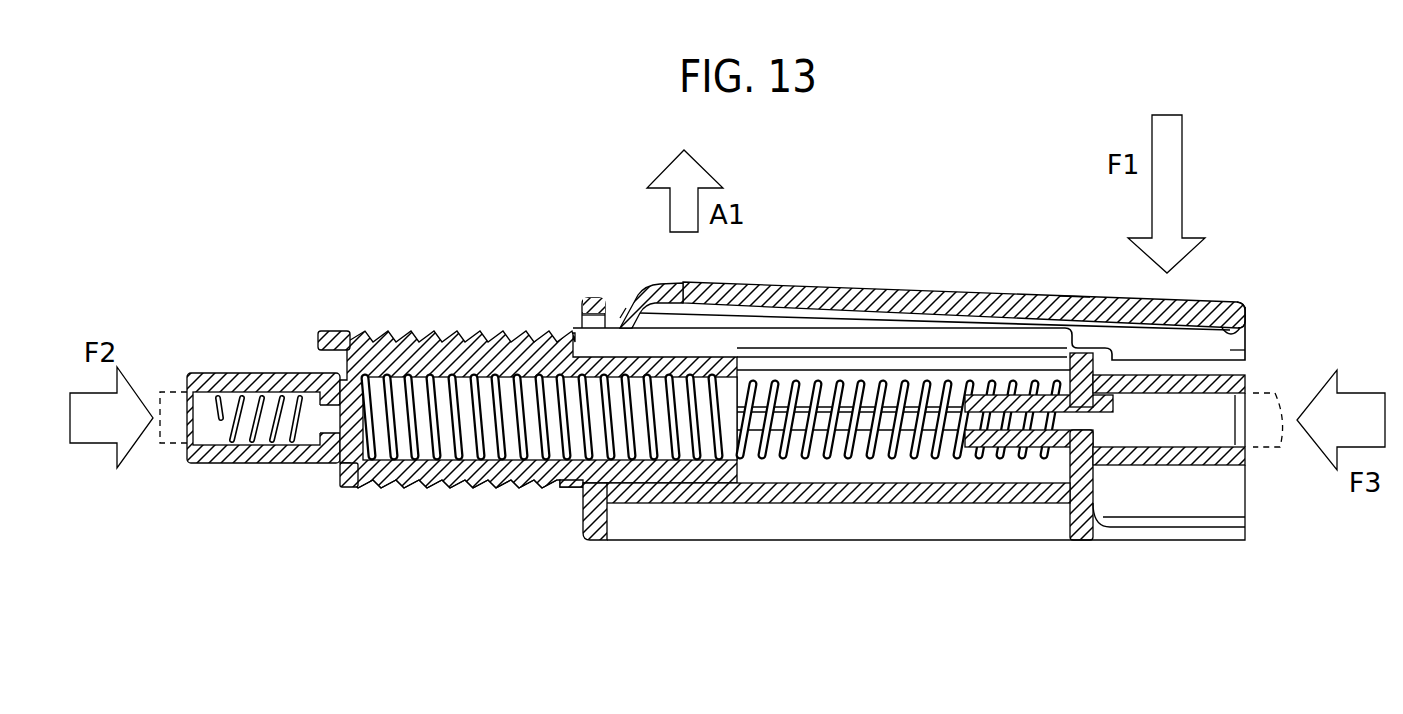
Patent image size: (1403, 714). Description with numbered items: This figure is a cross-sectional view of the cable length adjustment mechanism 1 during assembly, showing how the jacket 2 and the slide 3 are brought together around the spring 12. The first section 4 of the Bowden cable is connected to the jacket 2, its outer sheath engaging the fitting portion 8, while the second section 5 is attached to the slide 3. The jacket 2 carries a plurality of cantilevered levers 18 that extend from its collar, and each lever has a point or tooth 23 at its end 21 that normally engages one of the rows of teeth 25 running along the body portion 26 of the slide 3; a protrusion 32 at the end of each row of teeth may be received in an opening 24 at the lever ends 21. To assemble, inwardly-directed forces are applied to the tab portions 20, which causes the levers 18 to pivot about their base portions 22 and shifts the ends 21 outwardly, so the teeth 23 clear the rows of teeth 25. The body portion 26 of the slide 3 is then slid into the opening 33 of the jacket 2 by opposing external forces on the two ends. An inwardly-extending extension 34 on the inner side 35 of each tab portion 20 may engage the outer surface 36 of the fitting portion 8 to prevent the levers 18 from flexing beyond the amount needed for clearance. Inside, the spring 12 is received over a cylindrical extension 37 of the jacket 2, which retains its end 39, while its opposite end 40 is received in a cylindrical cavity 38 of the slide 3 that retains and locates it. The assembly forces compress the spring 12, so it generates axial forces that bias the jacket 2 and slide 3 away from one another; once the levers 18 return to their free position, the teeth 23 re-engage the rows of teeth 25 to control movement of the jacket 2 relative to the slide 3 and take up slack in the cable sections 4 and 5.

The cable length adjustment mechanism 1 is at (868, 242).
The jacket 2 is at (817, 543).
The slide 3 is at (255, 465).
The first section 4 is at (1270, 447).
The second section 5 is at (160, 392).
The fitting portion 8 is at (1197, 467).
The spring 12 is at (762, 467).
The levers 18 is at (900, 291).
The tab portions 20 is at (1200, 307).
The ends 21 is at (624, 312).
The base portions 22 is at (1075, 296).
The point or tooth 23 is at (640, 300).
The opening 24 is at (660, 297).
The rows of teeth 25 is at (405, 331).
The body portion 26 is at (537, 488).
The protrusion 32 is at (317, 338).
The opening 33 is at (568, 493).
The extension 34 is at (1247, 350).
The inner side 35 is at (1225, 332).
The outer surface 36 is at (1227, 375).
The cylindrical extension 37 is at (990, 470).
The cylindrical cavity 38 is at (423, 488).
The end 39 is at (1022, 463).
The opposite end 40 is at (388, 462).